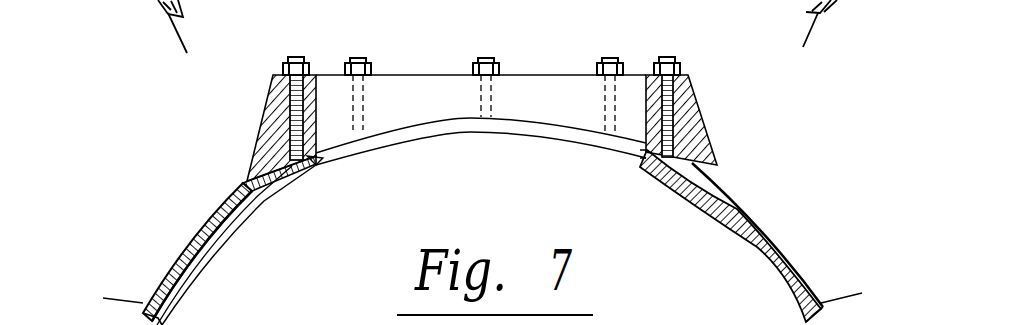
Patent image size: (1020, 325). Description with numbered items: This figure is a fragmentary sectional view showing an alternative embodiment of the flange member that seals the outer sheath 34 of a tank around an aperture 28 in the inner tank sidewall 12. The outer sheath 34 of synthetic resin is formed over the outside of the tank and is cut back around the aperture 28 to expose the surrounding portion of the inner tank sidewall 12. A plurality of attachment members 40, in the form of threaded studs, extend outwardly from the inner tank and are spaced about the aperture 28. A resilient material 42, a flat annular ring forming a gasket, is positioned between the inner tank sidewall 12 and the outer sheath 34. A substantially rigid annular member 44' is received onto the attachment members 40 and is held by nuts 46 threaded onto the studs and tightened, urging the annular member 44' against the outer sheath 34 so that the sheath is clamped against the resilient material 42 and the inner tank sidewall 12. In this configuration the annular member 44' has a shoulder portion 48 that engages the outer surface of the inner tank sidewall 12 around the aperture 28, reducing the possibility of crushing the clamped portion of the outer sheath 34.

The inner tank sidewall 12 is at (272, 200).
The aperture 28 is at (325, 155).
The outer sheath 34 is at (215, 217).
The attachment members 40 is at (355, 57).
The resilient material 42 is at (280, 179).
The annular member 44' is at (724, 120).
The nuts 46 is at (617, 72).
The shoulder portion 48 is at (647, 142).